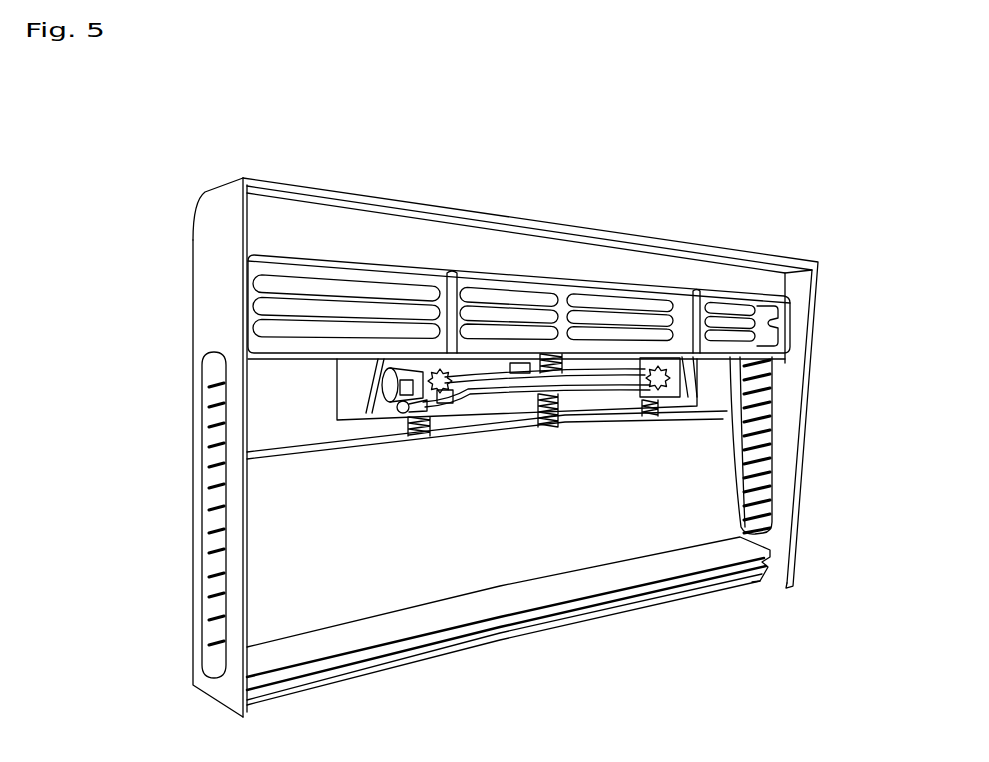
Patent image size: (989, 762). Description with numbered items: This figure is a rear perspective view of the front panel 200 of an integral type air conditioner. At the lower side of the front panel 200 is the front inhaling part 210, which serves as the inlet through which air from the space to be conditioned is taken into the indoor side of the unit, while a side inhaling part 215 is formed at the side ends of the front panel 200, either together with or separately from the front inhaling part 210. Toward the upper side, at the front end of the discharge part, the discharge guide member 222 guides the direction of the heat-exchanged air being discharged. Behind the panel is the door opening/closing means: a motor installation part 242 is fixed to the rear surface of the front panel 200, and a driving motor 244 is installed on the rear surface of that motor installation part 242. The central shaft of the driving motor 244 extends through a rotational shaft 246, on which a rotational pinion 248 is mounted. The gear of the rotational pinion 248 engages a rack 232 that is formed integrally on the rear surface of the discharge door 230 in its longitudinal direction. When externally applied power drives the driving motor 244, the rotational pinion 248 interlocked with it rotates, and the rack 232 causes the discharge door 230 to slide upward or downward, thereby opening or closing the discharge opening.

The front panel 200 is at (421, 190).
The front inhaling part 210 is at (693, 555).
The side inhaling part 215 is at (772, 415).
The discharge guide member 222 is at (502, 273).
The discharge door 230 is at (280, 403).
The rack 232 is at (647, 410).
The motor installation part 242 is at (353, 370).
The driving motor 244 is at (383, 387).
The rotational shaft 246 is at (493, 380).
The rotational pinion 248 is at (662, 352).